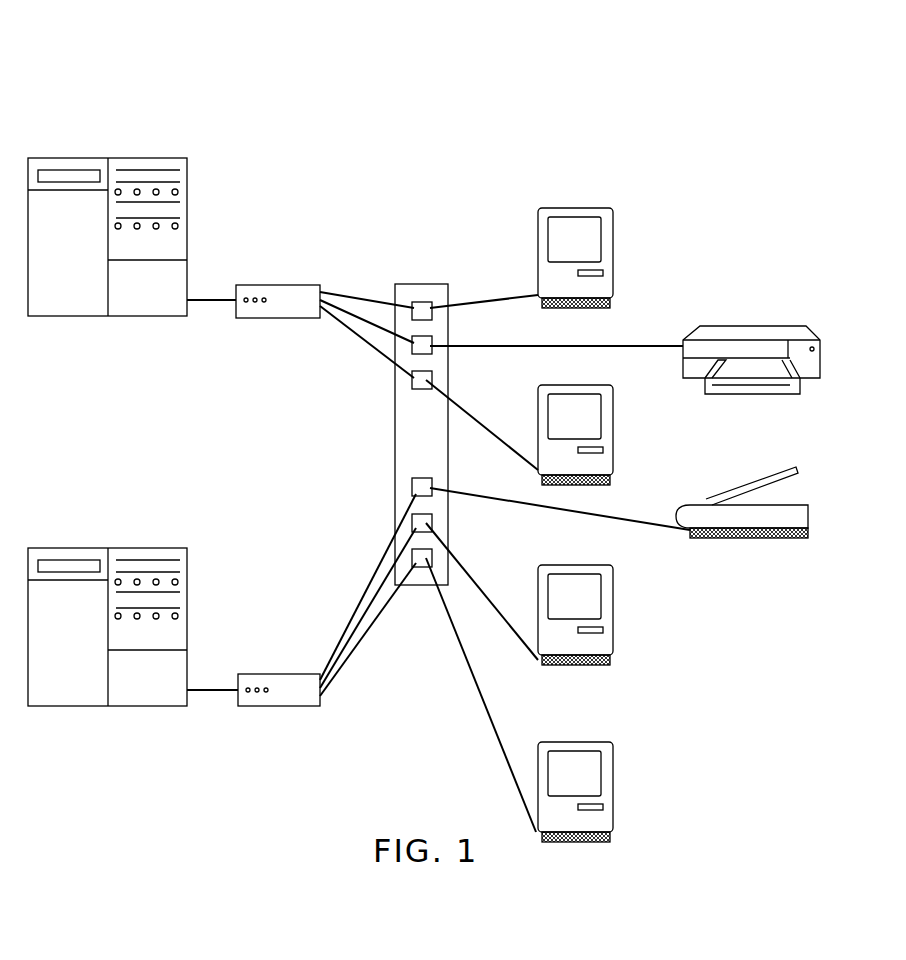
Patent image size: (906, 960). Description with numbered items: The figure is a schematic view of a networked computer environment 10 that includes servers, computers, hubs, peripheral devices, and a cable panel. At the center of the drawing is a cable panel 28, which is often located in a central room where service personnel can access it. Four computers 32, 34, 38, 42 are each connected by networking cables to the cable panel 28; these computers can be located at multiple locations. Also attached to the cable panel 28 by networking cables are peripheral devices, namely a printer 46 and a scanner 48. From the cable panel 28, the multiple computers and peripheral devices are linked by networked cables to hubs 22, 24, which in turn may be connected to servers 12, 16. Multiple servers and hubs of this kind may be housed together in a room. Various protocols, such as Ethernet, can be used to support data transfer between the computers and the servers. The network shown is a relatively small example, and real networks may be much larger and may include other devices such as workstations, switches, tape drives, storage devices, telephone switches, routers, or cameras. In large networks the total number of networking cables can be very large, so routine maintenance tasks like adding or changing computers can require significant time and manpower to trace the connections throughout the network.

The networked environment 10 is at (140, 55).
The server 12 is at (187, 206).
The server 16 is at (187, 596).
The hub 22 is at (250, 285).
The hub 24 is at (250, 674).
The cable panel 28 is at (410, 284).
The computer 32 is at (613, 260).
The computer 34 is at (613, 440).
The computer 38 is at (613, 616).
The computer 42 is at (614, 796).
The printer 46 is at (705, 324).
The scanner 48 is at (698, 505).